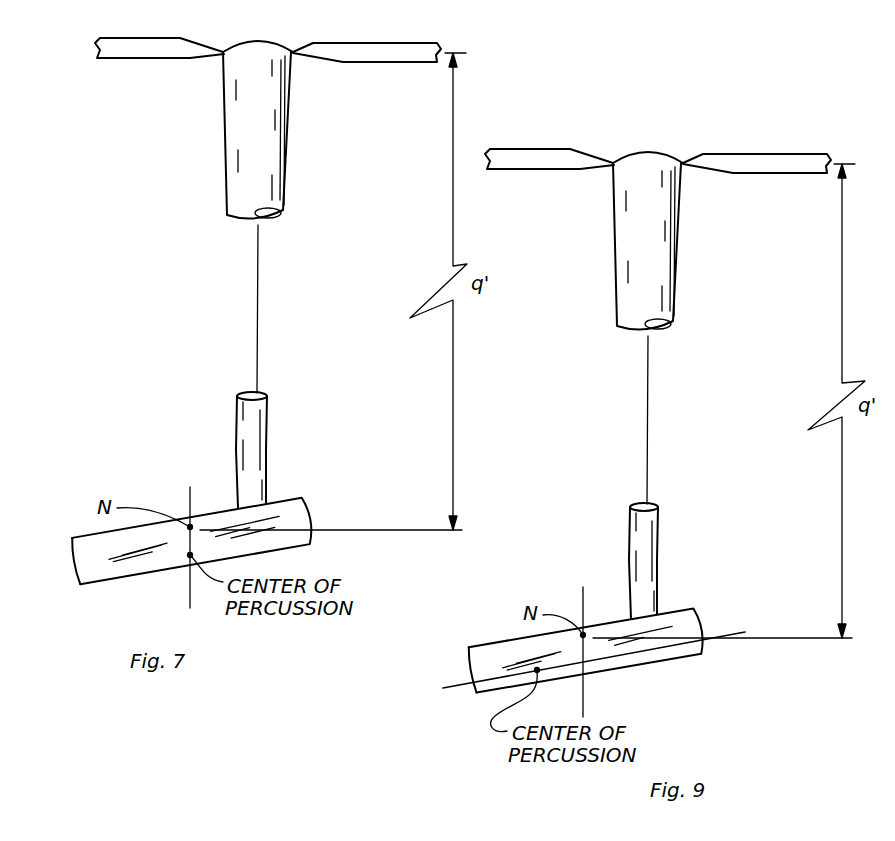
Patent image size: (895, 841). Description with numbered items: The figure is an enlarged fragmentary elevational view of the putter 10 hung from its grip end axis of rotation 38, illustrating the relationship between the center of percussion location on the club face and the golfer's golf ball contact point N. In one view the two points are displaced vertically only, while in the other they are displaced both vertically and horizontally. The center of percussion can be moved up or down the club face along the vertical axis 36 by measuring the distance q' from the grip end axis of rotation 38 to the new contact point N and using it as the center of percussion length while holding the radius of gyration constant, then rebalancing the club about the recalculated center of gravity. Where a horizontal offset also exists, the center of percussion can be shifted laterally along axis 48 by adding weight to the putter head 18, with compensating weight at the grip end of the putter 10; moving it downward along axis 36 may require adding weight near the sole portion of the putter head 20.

In FIG. 7, the putter 10 is at (298, 449).
In FIG. 9, the putter 10 is at (695, 538).
In FIG. 7, the putter head 18 is at (302, 544).
In FIG. 9, the putter head 18 is at (653, 660).
In FIG. 7, the putter head 20 is at (72, 572).
In FIG. 9, the putter head 20 is at (470, 665).
In FIG. 7, the vertical axis 36 is at (190, 497).
In FIG. 9, the vertical axis 36 is at (583, 587).
In FIG. 7, the grip end axis of rotation 38 is at (387, 63).
In FIG. 9, the grip end axis of rotation 38 is at (777, 152).
In FIG. 9, the axis 48 is at (737, 628).